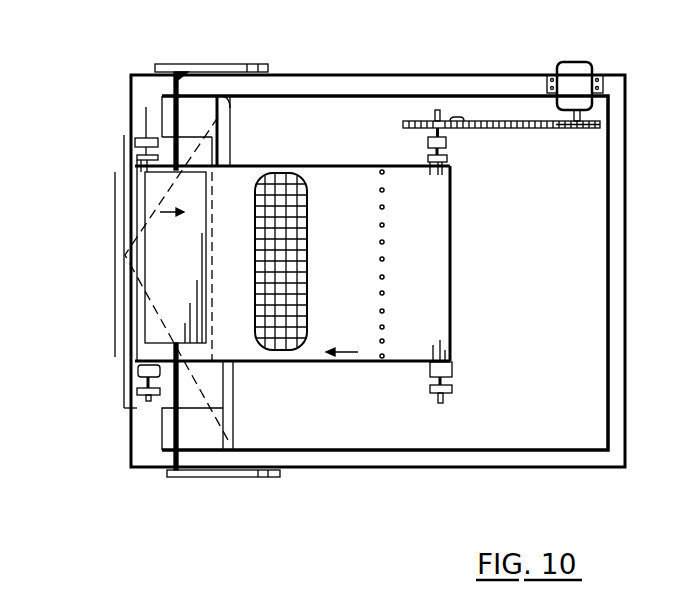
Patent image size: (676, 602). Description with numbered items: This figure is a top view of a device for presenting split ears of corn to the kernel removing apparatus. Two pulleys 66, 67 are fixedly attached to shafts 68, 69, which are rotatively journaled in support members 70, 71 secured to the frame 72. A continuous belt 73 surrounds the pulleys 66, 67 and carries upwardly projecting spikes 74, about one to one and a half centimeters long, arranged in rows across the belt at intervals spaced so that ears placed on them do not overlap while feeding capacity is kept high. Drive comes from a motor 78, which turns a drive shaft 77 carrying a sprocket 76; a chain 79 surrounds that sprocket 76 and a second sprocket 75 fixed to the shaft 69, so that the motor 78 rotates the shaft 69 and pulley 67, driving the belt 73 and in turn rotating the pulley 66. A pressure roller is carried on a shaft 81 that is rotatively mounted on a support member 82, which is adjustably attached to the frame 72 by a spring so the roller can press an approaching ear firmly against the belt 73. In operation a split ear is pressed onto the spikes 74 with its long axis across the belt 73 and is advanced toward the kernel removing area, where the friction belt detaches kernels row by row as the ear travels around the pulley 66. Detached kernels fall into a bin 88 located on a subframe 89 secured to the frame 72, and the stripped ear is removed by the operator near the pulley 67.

The pulley 66 is at (138, 370).
The pulley 67 is at (447, 160).
The shaft 68 is at (148, 401).
The shaft 69 is at (437, 110).
The support member 70 is at (137, 392).
The support member 71 is at (446, 142).
The frame 72 is at (415, 468).
The continuous belt 73 is at (345, 165).
The spikes 74 is at (384, 170).
The sprocket 75 is at (456, 118).
The sprocket 76 is at (566, 130).
The drive shaft 77 is at (573, 116).
The motor 78 is at (567, 66).
The chain 79 is at (512, 130).
The shaft 81 is at (178, 72).
The support member 82 is at (212, 64).
The bin 88 is at (124, 140).
The subframe 89 is at (218, 108).